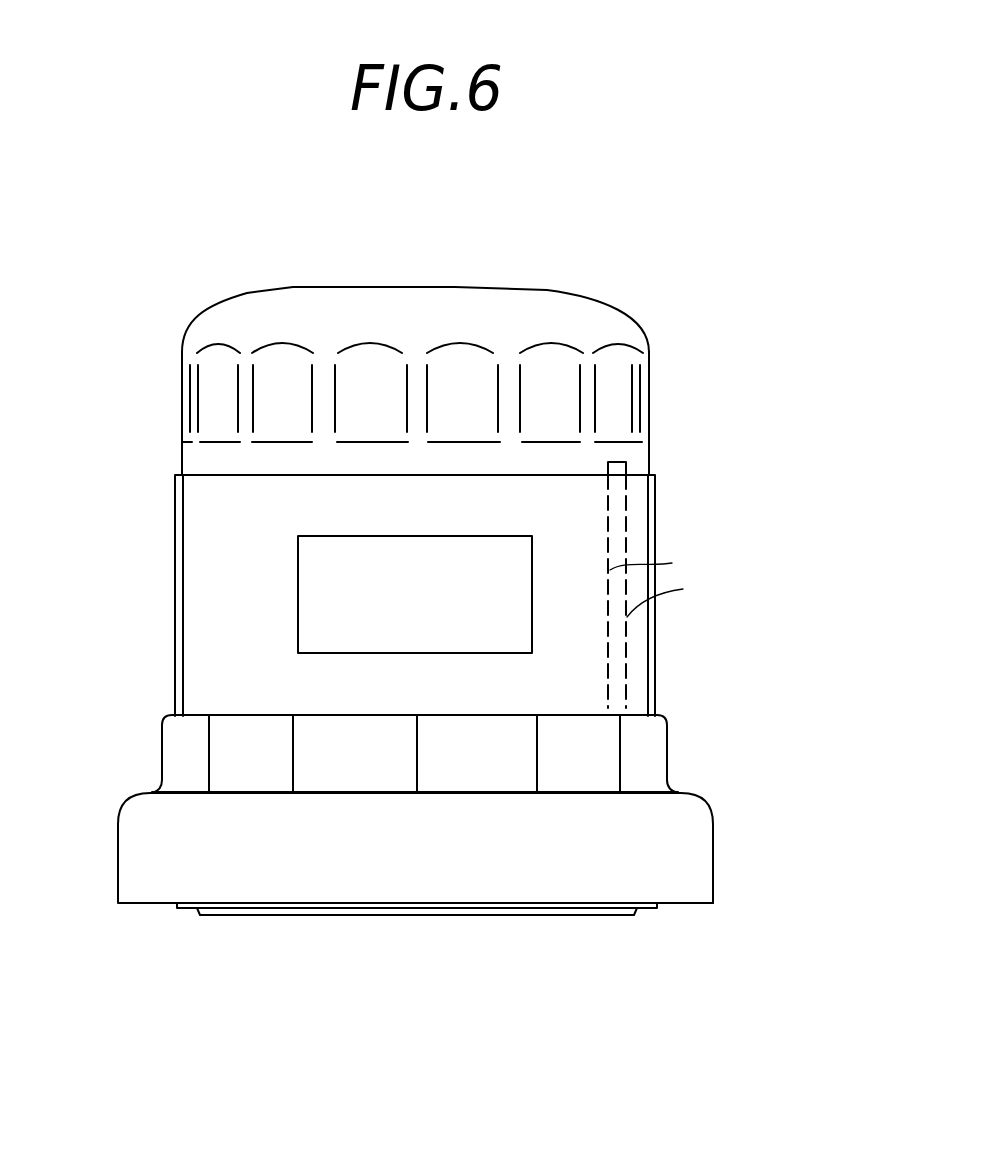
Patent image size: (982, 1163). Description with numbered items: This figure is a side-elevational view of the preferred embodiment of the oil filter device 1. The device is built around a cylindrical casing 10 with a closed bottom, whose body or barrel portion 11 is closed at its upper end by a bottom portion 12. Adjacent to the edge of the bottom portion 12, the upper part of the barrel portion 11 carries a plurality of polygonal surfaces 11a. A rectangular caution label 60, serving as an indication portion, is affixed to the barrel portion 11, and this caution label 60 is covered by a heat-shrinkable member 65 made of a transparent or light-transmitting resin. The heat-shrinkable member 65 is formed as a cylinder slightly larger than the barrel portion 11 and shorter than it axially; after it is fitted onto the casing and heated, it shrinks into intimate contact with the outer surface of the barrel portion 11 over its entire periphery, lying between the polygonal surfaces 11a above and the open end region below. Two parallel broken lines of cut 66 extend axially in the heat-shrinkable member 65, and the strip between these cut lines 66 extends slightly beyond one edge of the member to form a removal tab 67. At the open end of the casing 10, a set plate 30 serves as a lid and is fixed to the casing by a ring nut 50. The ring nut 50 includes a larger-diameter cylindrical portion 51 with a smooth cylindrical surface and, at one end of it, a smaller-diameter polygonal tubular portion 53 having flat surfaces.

The oil filter device 1 is at (177, 314).
The casing 10 is at (666, 394).
The barrel portion 11 is at (183, 605).
The polygonal surfaces 11a is at (212, 407).
The bottom portion 12 is at (457, 287).
The heat-shrinkable member 65 is at (175, 528).
The broken lines of cut 66 is at (682, 560).
The removal tab 67 is at (630, 462).
The caution label 60 is at (298, 623).
The polygonal tubular portion 53 is at (652, 750).
The ring nut 50 is at (730, 797).
The cylindrical portion 51 is at (715, 855).
The set plate 30 is at (645, 921).